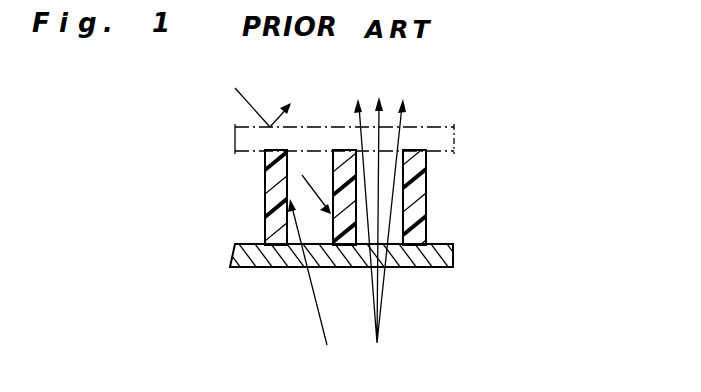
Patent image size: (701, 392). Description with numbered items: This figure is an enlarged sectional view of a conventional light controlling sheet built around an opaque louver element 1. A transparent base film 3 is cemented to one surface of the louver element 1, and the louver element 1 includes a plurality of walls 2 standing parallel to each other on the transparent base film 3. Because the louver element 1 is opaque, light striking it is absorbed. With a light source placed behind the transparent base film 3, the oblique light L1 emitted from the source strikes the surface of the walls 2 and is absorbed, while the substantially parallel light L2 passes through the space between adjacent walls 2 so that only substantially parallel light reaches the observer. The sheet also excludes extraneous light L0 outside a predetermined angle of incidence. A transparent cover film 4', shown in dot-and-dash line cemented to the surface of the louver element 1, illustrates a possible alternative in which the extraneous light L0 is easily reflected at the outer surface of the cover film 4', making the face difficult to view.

The louver element 1 is at (446, 202).
The walls 2 is at (417, 164).
The transparent base film 3 is at (420, 263).
The transparent cover film 4' is at (300, 160).
The extraneous light L0 is at (272, 140).
The oblique light L1 is at (315, 289).
The substantially parallel light L2 is at (380, 238).